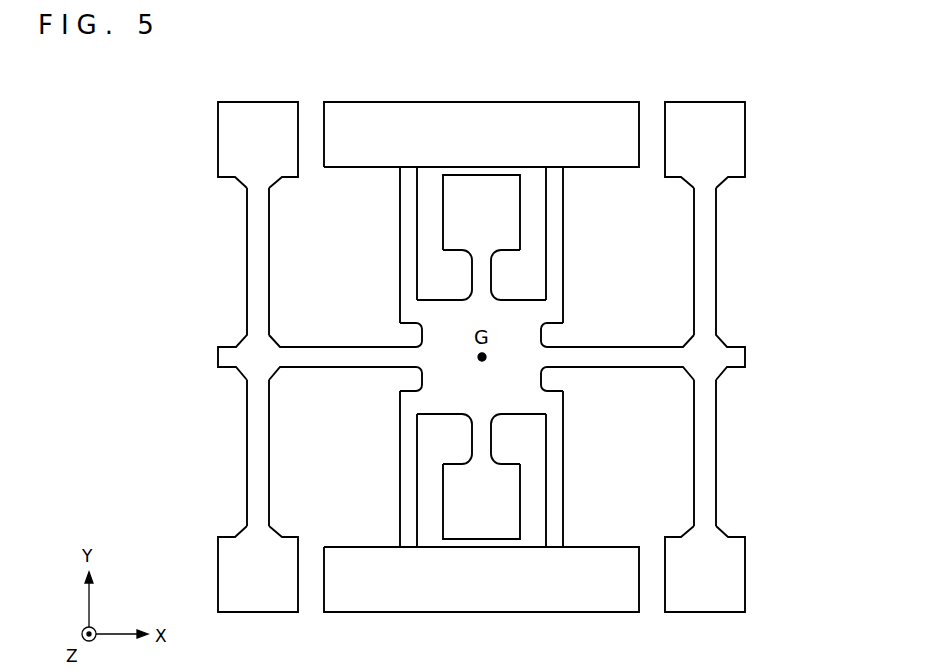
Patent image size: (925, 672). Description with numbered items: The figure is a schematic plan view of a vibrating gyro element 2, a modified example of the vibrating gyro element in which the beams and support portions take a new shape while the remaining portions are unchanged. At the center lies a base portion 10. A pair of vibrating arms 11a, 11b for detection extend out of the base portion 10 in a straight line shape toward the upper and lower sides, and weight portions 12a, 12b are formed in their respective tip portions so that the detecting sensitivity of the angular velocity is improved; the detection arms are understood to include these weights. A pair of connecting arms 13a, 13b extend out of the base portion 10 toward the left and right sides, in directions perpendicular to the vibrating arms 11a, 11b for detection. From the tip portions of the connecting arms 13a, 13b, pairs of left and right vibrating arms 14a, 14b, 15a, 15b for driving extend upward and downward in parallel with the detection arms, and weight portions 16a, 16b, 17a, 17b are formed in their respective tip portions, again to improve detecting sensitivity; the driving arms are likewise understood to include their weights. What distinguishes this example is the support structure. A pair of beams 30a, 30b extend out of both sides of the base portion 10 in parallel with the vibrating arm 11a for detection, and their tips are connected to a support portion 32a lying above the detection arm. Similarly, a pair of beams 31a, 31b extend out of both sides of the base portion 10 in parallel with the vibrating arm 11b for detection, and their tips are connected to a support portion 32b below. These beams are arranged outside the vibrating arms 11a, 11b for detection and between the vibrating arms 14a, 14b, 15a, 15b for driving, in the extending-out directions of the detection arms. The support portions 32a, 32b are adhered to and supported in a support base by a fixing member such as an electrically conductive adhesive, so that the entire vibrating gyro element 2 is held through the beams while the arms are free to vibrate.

The vibrating gyro element 2 is at (777, 105).
The base portion 10 is at (545, 371).
The vibrating arm for detection 11a is at (481, 272).
The vibrating arm for detection 11b is at (481, 442).
The weight portion 12a is at (507, 228).
The weight portion 12b is at (508, 484).
The connecting arm 13a is at (345, 356).
The connecting arm 13b is at (613, 356).
The vibrating arm for driving 14a is at (247, 262).
The vibrating arm for driving 14b is at (247, 450).
The vibrating arm for driving 15a is at (716, 258).
The vibrating arm for driving 15b is at (716, 450).
The weight portion 16a is at (218, 136).
The weight portion 16b is at (218, 570).
The weight portion 17a is at (745, 135).
The weight portion 17b is at (745, 570).
The beam 30a is at (400, 197).
The beam 30b is at (563, 197).
The beam 31a is at (400, 513).
The beam 31b is at (563, 513).
The support portion 32a is at (480, 102).
The support portion 32b is at (482, 612).